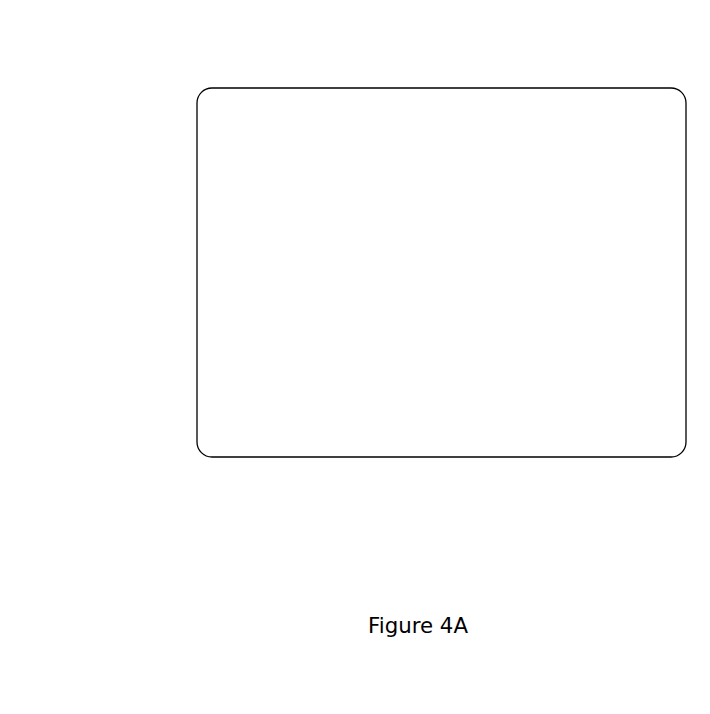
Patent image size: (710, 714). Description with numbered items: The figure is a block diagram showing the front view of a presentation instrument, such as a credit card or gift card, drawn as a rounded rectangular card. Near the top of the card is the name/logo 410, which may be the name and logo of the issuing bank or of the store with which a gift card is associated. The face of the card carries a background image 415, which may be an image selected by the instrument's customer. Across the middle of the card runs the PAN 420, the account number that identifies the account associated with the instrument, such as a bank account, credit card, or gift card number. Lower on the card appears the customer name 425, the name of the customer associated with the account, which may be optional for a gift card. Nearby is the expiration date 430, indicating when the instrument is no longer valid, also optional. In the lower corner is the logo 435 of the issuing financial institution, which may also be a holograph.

The name/logo 410 is at (328, 117).
The background image 415 is at (531, 160).
The PAN 420 is at (307, 252).
The customer name 425 is at (220, 403).
The expiration date 430 is at (473, 368).
The logo 435 is at (627, 443).